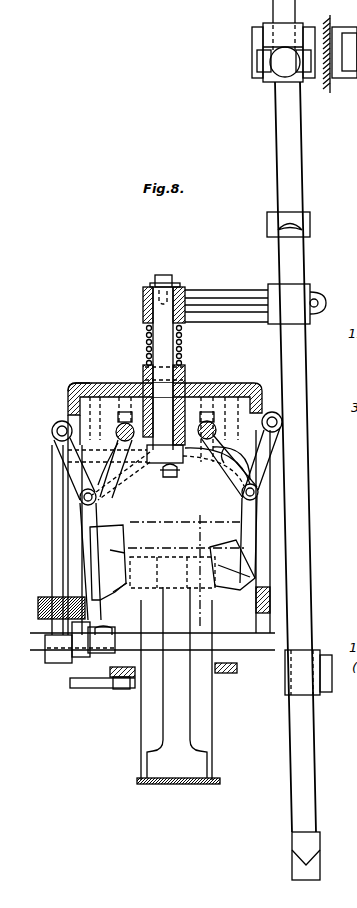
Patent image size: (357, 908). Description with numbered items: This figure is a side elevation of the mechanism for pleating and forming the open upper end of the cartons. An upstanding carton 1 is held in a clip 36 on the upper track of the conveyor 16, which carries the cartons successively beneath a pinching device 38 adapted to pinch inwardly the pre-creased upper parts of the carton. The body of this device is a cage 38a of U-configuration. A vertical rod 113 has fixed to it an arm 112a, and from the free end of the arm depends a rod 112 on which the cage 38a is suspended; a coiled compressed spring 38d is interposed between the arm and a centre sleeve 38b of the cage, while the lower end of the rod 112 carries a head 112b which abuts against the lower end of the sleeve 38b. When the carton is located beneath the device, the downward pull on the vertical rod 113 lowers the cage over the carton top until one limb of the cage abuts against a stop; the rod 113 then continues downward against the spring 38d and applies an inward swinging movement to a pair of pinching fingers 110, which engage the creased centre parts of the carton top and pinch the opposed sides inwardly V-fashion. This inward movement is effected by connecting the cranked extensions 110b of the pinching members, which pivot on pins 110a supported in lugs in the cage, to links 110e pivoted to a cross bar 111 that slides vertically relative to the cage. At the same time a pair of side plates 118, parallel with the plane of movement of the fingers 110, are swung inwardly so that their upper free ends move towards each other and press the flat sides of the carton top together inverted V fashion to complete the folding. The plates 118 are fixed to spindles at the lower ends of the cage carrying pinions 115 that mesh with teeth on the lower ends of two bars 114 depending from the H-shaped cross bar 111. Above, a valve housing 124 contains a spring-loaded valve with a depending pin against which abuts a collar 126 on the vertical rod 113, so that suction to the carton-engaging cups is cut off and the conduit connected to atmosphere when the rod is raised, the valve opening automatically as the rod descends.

The carton 1 is at (213, 707).
The conveyor 16 is at (177, 645).
The clip 36 is at (168, 773).
The pinching device 38 is at (231, 383).
The cage 38a is at (70, 407).
The centre sleeve 38b is at (148, 392).
The coiled compressed spring 38d is at (182, 343).
The pinching fingers 110 is at (225, 545).
The pins 110a is at (120, 428).
The cranked extensions 110b is at (58, 428).
The links 110e is at (60, 456).
The cross bar 111 is at (152, 486).
The rod 112 is at (149, 346).
The arm 112a is at (232, 317).
The head 112b is at (203, 488).
The vertical rod 113 is at (298, 388).
The bars 114 is at (54, 572).
The pinions 115 is at (63, 663).
The side plates 118 is at (193, 609).
The housing 124 is at (281, 72).
The collar 126 is at (267, 223).